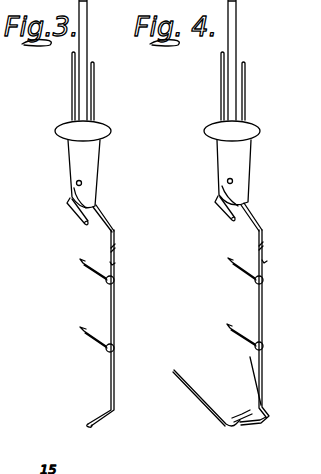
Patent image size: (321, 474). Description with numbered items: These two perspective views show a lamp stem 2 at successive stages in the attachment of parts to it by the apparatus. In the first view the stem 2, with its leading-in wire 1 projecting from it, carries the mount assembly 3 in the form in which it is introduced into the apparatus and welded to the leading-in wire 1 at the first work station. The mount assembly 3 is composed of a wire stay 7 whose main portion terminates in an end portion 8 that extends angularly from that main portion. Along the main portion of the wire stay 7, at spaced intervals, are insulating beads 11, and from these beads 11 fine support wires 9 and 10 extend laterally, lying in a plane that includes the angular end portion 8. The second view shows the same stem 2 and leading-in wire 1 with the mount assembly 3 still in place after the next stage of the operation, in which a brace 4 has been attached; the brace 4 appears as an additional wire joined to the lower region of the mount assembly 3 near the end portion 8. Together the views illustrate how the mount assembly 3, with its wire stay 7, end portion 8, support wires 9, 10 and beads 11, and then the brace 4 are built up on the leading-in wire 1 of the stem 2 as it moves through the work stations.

In FIG. 3, the leading-in wire 1 is at (104, 223).
In FIG. 4, the leading-in wire 1 is at (255, 223).
In FIG. 3, the stem 2 is at (96, 162).
In FIG. 4, the stem 2 is at (246, 162).
In FIG. 3, the mount assembly 3 is at (120, 312).
In FIG. 4, the mount assembly 3 is at (246, 292).
In FIG. 4, the brace 4 is at (208, 412).
In FIG. 3, the wire stay 7 is at (116, 270).
In FIG. 4, the wire stay 7 is at (264, 270).
In FIG. 3, the end portion 8 is at (100, 421).
In FIG. 4, the end portion 8 is at (240, 424).
In FIG. 3, the fine support wire 9 is at (98, 347).
In FIG. 4, the fine support wire 9 is at (241, 335).
In FIG. 3, the fine support wire 10 is at (100, 278).
In FIG. 4, the fine support wire 10 is at (242, 269).
In FIG. 3, the insulating beads 11 is at (114, 281).
In FIG. 4, the insulating beads 11 is at (259, 313).